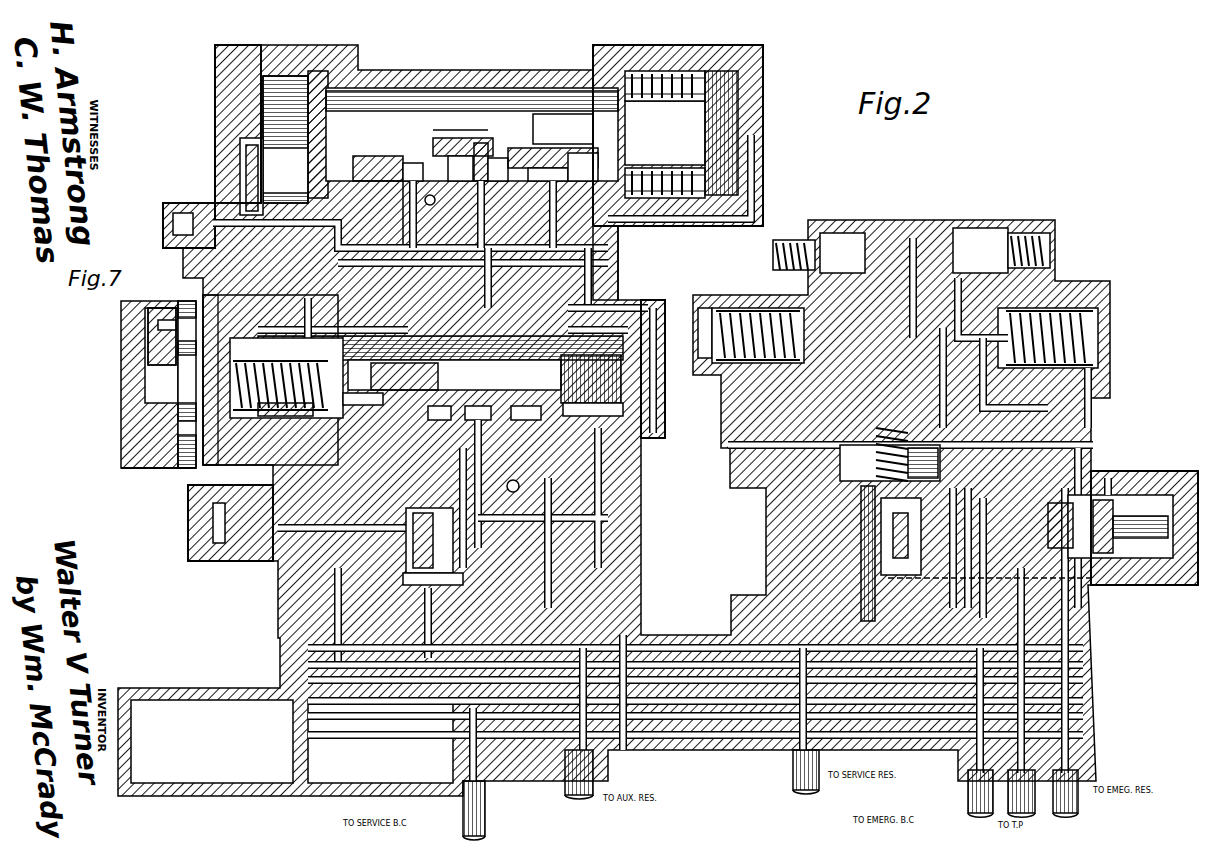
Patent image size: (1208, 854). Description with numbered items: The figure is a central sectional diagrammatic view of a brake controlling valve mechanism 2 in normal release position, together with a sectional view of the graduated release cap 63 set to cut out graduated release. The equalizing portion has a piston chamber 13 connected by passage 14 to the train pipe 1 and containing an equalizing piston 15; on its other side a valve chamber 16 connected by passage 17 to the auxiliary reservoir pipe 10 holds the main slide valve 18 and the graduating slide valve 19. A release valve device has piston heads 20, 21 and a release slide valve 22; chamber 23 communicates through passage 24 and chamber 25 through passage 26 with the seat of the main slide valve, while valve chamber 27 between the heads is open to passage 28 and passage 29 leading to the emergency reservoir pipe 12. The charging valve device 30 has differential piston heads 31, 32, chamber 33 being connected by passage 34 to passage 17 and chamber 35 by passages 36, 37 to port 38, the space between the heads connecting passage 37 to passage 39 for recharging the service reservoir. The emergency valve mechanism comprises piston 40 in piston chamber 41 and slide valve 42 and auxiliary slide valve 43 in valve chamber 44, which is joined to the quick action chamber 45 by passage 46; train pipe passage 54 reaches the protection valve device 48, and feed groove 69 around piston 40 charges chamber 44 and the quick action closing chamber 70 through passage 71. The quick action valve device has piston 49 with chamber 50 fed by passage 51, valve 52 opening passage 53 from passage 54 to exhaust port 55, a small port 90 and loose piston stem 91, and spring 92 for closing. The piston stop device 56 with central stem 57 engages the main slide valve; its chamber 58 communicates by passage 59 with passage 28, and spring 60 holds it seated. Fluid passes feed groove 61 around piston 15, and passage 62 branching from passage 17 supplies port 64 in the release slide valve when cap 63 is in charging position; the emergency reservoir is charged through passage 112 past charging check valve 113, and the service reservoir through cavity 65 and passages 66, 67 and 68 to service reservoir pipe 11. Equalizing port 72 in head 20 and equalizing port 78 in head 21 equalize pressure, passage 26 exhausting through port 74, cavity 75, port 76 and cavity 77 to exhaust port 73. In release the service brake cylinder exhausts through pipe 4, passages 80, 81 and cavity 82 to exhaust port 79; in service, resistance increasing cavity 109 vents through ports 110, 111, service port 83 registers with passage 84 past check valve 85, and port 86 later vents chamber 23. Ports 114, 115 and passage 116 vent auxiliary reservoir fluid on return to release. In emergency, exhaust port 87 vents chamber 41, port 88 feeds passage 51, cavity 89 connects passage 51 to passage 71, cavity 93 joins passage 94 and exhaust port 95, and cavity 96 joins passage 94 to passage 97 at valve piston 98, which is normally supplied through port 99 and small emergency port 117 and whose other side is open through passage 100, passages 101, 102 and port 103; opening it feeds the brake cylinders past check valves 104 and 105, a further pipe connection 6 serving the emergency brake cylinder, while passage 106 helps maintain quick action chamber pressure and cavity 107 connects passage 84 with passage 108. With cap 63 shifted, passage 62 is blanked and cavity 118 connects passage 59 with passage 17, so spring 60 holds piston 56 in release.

In FIG. 2, the train pipe 1 is at (1028, 780).
In FIG. 2, the valve casing 2 is at (608, 262).
In FIG. 2, the pipe 4 is at (482, 800).
In FIG. 2, the emergency brake cylinder pipe 6 is at (962, 780).
In FIG. 2, the auxiliary reservoir pipe 10 is at (590, 762).
In FIG. 2, the service reservoir pipe 11 is at (785, 762).
In FIG. 2, the emergency reservoir pipe 12 is at (1070, 790).
In FIG. 2, the piston chamber 13 is at (255, 100).
In FIG. 2, the passage 14 is at (232, 160).
In FIG. 2, the equalizing piston 15 is at (302, 153).
In FIG. 2, the valve chamber 16 is at (495, 80).
In FIG. 2, the passage 17 is at (335, 232).
In FIG. 2, the main slide valve 18 is at (355, 150).
In FIG. 2, the graduating slide valve 19 is at (540, 132).
In FIG. 2, the piston head 20 is at (256, 406).
In FIG. 2, the piston head 21 is at (640, 404).
In FIG. 2, the slide valve 22 is at (492, 382).
In FIG. 2, the chamber 23 is at (252, 362).
In FIG. 7, the passage 24 is at (137, 372).
In FIG. 2, the passage 24 is at (228, 300).
In FIG. 2, the chamber 25 is at (640, 378).
In FIG. 2, the passage 26 is at (615, 308).
In FIG. 2, the valve chamber 27 is at (440, 322).
In FIG. 2, the passage 28 is at (262, 470).
In FIG. 2, the passage 29 is at (1085, 410).
In FIG. 2, the charging valve device 30 is at (400, 532).
In FIG. 2, the piston head 31 is at (446, 556).
In FIG. 2, the piston head 32 is at (422, 500).
In FIG. 2, the chamber 33 is at (400, 556).
In FIG. 2, the passage 34 is at (400, 606).
In FIG. 2, the chamber 35 is at (440, 500).
In FIG. 2, the passage 36 is at (388, 496).
In FIG. 2, the passage 37 is at (376, 472).
In FIG. 2, the port 38 is at (366, 400).
In FIG. 2, the passage 39 is at (460, 452).
In FIG. 2, the piston 40 is at (862, 440).
In FIG. 2, the piston chamber 41 is at (920, 440).
In FIG. 2, the slide valve 42 is at (885, 595).
In FIG. 2, the auxiliary slide valve 43 is at (855, 496).
In FIG. 2, the valve chamber 44 is at (858, 540).
In FIG. 2, the quick action chamber 45 is at (312, 783).
In FIG. 2, the passage 46 is at (730, 745).
In FIG. 2, the protection valve device 48 is at (738, 300).
In FIG. 2, the piston 49 is at (1160, 577).
In FIG. 2, the chamber 50 is at (1160, 470).
In FIG. 2, the passage 51 is at (1085, 577).
In FIG. 2, the valve 52 is at (1065, 490).
In FIG. 2, the passage 53 is at (1090, 542).
In FIG. 2, the train pipe passage 54 is at (905, 330).
In FIG. 2, the atmospheric exhaust port 55 is at (1100, 470).
In FIG. 2, the piston stop device 56 is at (680, 45).
In FIG. 2, the central stem 57 is at (625, 128).
In FIG. 2, the chamber 58 is at (745, 100).
In FIG. 2, the passage 59 is at (746, 140).
In FIG. 2, the spring 60 is at (640, 68).
In FIG. 2, the feed groove 61 is at (315, 65).
In FIG. 2, the passage 62 is at (205, 300).
In FIG. 7, the graduated release cap 63 is at (115, 458).
In FIG. 2, the port 64 is at (420, 382).
In FIG. 2, the cavity 65 is at (470, 398).
In FIG. 2, the passage 66 is at (512, 486).
In FIG. 2, the passage 67 is at (600, 238).
In FIG. 2, the passage 68 is at (905, 230).
In FIG. 2, the feed groove 69 is at (800, 455).
In FIG. 2, the quick action closing chamber 70 is at (150, 692).
In FIG. 2, the passage 71 is at (278, 650).
In FIG. 2, the equalizing port 72 is at (300, 300).
In FIG. 2, the atmospheric exhaust port 73 is at (428, 192).
In FIG. 2, the port 74 is at (480, 150).
In FIG. 2, the cavity 75 is at (472, 138).
In FIG. 2, the port 76 is at (430, 130).
In FIG. 2, the cavity 77 is at (395, 186).
In FIG. 2, the equalizing port 78 is at (650, 312).
In FIG. 2, the service brake cylinder exhaust port 79 is at (512, 478).
In FIG. 2, the passage 80 is at (790, 420).
In FIG. 2, the passage 81 is at (498, 606).
In FIG. 2, the cavity 82 is at (517, 398).
In FIG. 2, the service port 83 is at (565, 145).
In FIG. 2, the passage 84 is at (575, 250).
In FIG. 2, the check valve 85 is at (236, 548).
In FIG. 2, the port 86 is at (398, 150).
In FIG. 2, the exhaust port 87 is at (700, 295).
In FIG. 2, the port 88 is at (860, 520).
In FIG. 2, the cavity 89 is at (890, 530).
In FIG. 2, the small port 90 is at (1125, 472).
In FIG. 2, the piston stem 91 is at (1125, 580).
In FIG. 2, the spring 92 is at (945, 500).
In FIG. 2, the cavity 93 is at (862, 560).
In FIG. 2, the passage 94 is at (426, 440).
In FIG. 2, the exhaust port 95 is at (942, 540).
In FIG. 2, the cavity 96 is at (440, 398).
In FIG. 2, the passage 97 is at (1095, 360).
In FIG. 2, the valve piston 98 is at (1040, 288).
In FIG. 2, the port 99 is at (460, 338).
In FIG. 2, the passage 100 is at (972, 356).
In FIG. 2, the passage 101 is at (956, 320).
In FIG. 2, the passage 102 is at (968, 336).
In FIG. 2, the port 103 is at (870, 578).
In FIG. 2, the check valve 104 is at (968, 225).
In FIG. 2, the check valve 105 is at (825, 235).
In FIG. 2, the passage 106 is at (590, 470).
In FIG. 2, the cavity 107 is at (652, 156).
In FIG. 2, the passage 108 is at (508, 246).
In FIG. 2, the resistance increasing cavity 109 is at (370, 174).
In FIG. 2, the port 110 is at (428, 142).
In FIG. 2, the port 111 is at (448, 130).
In FIG. 2, the passage 112 is at (285, 193).
In FIG. 2, the charging check valve 113 is at (185, 195).
In FIG. 2, the port 114 is at (553, 161).
In FIG. 2, the port 115 is at (551, 172).
In FIG. 2, the passage 116 is at (512, 262).
In FIG. 2, the small emergency port 117 is at (1040, 272).
In FIG. 7, the cavity 118 is at (140, 340).